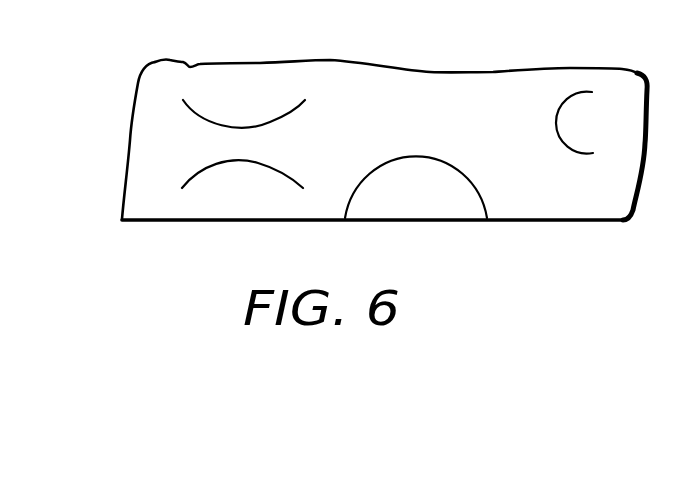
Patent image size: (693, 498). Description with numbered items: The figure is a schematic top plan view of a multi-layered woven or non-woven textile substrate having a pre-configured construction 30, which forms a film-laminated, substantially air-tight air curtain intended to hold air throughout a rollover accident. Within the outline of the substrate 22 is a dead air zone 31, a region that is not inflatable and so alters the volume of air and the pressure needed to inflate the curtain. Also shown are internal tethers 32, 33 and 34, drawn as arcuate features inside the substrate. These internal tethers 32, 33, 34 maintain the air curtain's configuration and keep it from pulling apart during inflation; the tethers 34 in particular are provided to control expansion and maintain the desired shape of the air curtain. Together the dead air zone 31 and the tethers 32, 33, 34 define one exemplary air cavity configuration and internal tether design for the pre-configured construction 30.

The workpiece block 22 is at (327, 141).
The pre-configured construction 30 is at (463, 63).
The dead air zone 31 is at (408, 198).
The internal tether 32 is at (580, 148).
The internal tether 33 is at (197, 175).
The internal tether 34 is at (197, 112).